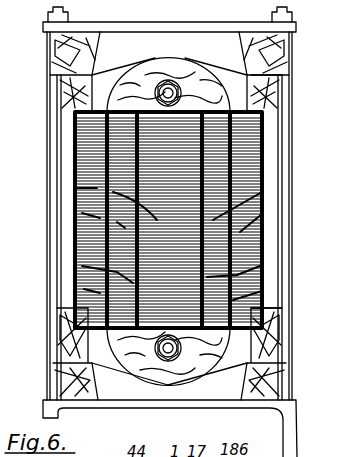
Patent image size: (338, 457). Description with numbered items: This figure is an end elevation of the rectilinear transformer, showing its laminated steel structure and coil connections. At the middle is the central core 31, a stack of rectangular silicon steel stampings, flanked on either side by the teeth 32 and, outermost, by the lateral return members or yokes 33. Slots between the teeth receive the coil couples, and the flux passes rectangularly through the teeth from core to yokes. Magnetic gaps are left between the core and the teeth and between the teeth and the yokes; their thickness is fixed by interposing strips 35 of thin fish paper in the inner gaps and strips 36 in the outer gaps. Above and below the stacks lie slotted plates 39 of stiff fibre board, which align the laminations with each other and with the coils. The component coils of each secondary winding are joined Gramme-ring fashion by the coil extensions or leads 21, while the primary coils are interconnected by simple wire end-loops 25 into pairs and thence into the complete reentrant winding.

The coil extensions or leads 21 is at (214, 78).
The wire end-loops 25 is at (130, 66).
The central core 31 is at (75, 188).
The teeth 32 is at (80, 212).
The lateral return members or yokes 33 is at (92, 247).
The strips of thin insulating material 35 is at (80, 265).
The strips of thin insulating material 36 is at (82, 288).
The slotted plates 39 is at (283, 110).